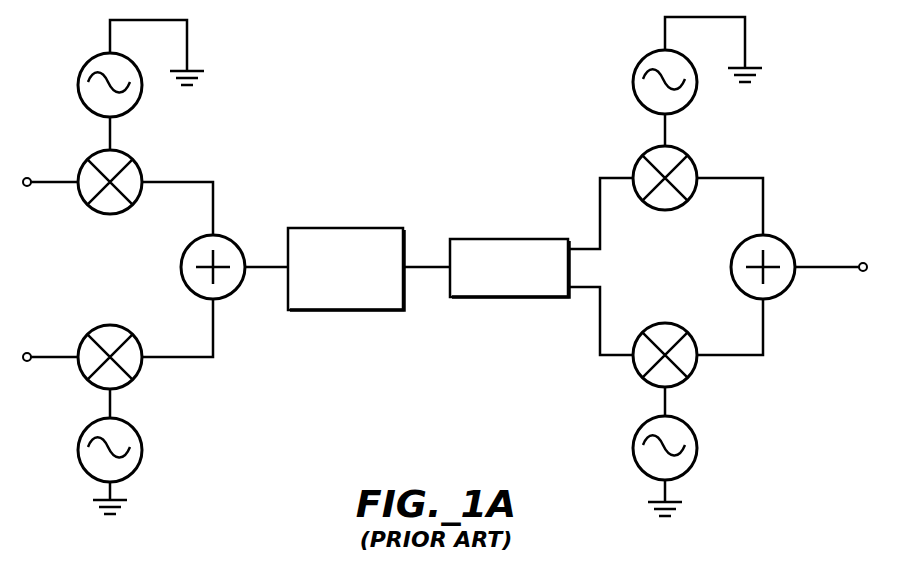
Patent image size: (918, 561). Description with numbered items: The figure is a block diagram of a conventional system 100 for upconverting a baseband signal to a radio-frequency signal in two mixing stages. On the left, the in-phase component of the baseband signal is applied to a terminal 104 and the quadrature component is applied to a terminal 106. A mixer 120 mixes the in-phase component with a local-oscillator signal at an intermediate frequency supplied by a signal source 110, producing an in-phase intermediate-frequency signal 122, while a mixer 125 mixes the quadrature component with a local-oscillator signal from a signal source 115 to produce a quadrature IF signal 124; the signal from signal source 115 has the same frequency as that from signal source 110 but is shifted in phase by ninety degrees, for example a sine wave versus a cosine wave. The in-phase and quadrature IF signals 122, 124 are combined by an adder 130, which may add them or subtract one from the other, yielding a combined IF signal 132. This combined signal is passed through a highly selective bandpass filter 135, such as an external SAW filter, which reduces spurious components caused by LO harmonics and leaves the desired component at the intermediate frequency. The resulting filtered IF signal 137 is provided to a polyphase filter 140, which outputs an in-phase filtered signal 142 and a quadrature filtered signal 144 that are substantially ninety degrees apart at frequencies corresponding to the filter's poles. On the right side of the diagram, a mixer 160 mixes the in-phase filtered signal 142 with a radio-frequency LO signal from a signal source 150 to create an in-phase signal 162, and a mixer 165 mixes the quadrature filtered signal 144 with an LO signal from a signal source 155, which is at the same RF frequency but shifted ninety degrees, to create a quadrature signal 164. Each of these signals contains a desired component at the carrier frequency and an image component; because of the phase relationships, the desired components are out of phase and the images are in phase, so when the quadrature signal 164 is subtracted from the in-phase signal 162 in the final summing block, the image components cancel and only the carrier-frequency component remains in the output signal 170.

The conventional system 100 is at (402, 58).
The terminal 104 is at (27, 187).
The terminal 106 is at (27, 352).
The signal source 110 is at (143, 93).
The signal source 115 is at (142, 453).
The mixer 120 is at (141, 168).
The in-phase intermediate-frequency signal 122 is at (200, 182).
The quadrature IF signal 124 is at (213, 360).
The mixer 125 is at (142, 372).
The adder 130 is at (183, 253).
The combined IF signal 132 is at (267, 266).
The bandpass filter 135 is at (335, 228).
The filtered IF signal 137 is at (432, 268).
The polyphase filter 140 is at (515, 239).
The in-phase filtered signal 142 is at (600, 225).
The quadrature filtered signal 144 is at (600, 318).
The signal source 150 is at (634, 78).
The signal source 155 is at (634, 450).
The mixer 160 is at (638, 161).
The in-phase signal 162 is at (725, 178).
The quadrature signal 164 is at (725, 355).
The mixer 165 is at (637, 361).
The output signal 170 is at (734, 268).